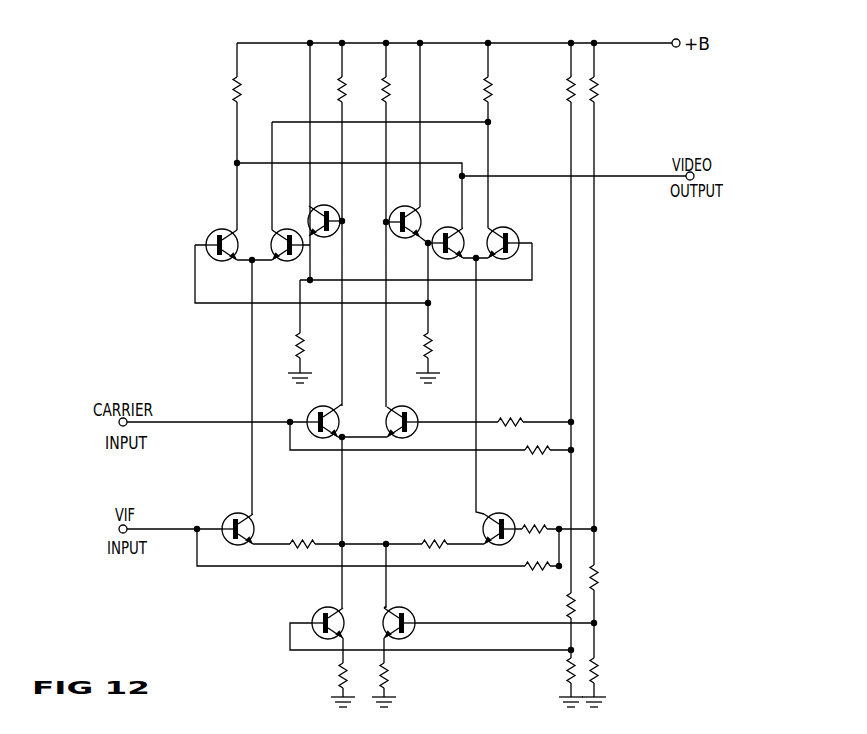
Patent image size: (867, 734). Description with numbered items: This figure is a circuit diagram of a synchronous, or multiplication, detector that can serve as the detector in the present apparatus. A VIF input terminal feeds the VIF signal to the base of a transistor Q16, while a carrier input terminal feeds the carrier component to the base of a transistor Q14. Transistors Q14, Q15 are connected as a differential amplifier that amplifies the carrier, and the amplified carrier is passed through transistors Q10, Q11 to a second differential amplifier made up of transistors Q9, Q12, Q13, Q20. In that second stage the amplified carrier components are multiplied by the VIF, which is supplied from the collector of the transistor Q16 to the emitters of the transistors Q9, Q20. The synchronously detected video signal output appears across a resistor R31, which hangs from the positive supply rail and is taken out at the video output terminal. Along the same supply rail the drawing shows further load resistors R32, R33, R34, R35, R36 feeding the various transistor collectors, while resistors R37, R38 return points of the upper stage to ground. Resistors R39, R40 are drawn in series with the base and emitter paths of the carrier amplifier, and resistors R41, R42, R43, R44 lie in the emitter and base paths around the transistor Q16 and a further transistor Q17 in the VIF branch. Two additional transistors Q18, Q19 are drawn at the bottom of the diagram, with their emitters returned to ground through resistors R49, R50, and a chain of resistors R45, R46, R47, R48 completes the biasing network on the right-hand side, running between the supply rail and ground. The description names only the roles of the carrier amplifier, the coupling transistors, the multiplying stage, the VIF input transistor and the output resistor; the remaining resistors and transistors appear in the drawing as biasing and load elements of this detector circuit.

The resistor R31 is at (254, 94).
The resistor R32 is at (358, 94).
The resistor R33 is at (402, 94).
The resistor R34 is at (504, 94).
The resistor R35 is at (557, 95).
The resistor R36 is at (610, 94).
The resistor R37 is at (316, 346).
The resistor R38 is at (445, 345).
The resistor R39 is at (515, 409).
The resistor R40 is at (541, 467).
The resistor R41 is at (303, 530).
The resistor R42 is at (434, 530).
The resistor R43 is at (531, 517).
The resistor R44 is at (533, 581).
The resistor R45 is at (556, 609).
The resistor R46 is at (554, 671).
The resistor R47 is at (611, 577).
The resistor R48 is at (611, 671).
The resistor R49 is at (329, 674).
The resistor R50 is at (400, 674).
The transistor Q9 is at (287, 232).
The transistor Q10 is at (327, 236).
The transistor Q11 is at (405, 235).
The transistor Q12 is at (448, 229).
The transistor Q13 is at (511, 233).
The transistor Q14 is at (310, 415).
The transistor Q15 is at (389, 414).
The transistor Q16 is at (226, 521).
The transistor Q17 is at (485, 526).
The transistor Q18 is at (319, 613).
The transistor Q19 is at (408, 613).
The transistor Q20 is at (209, 234).